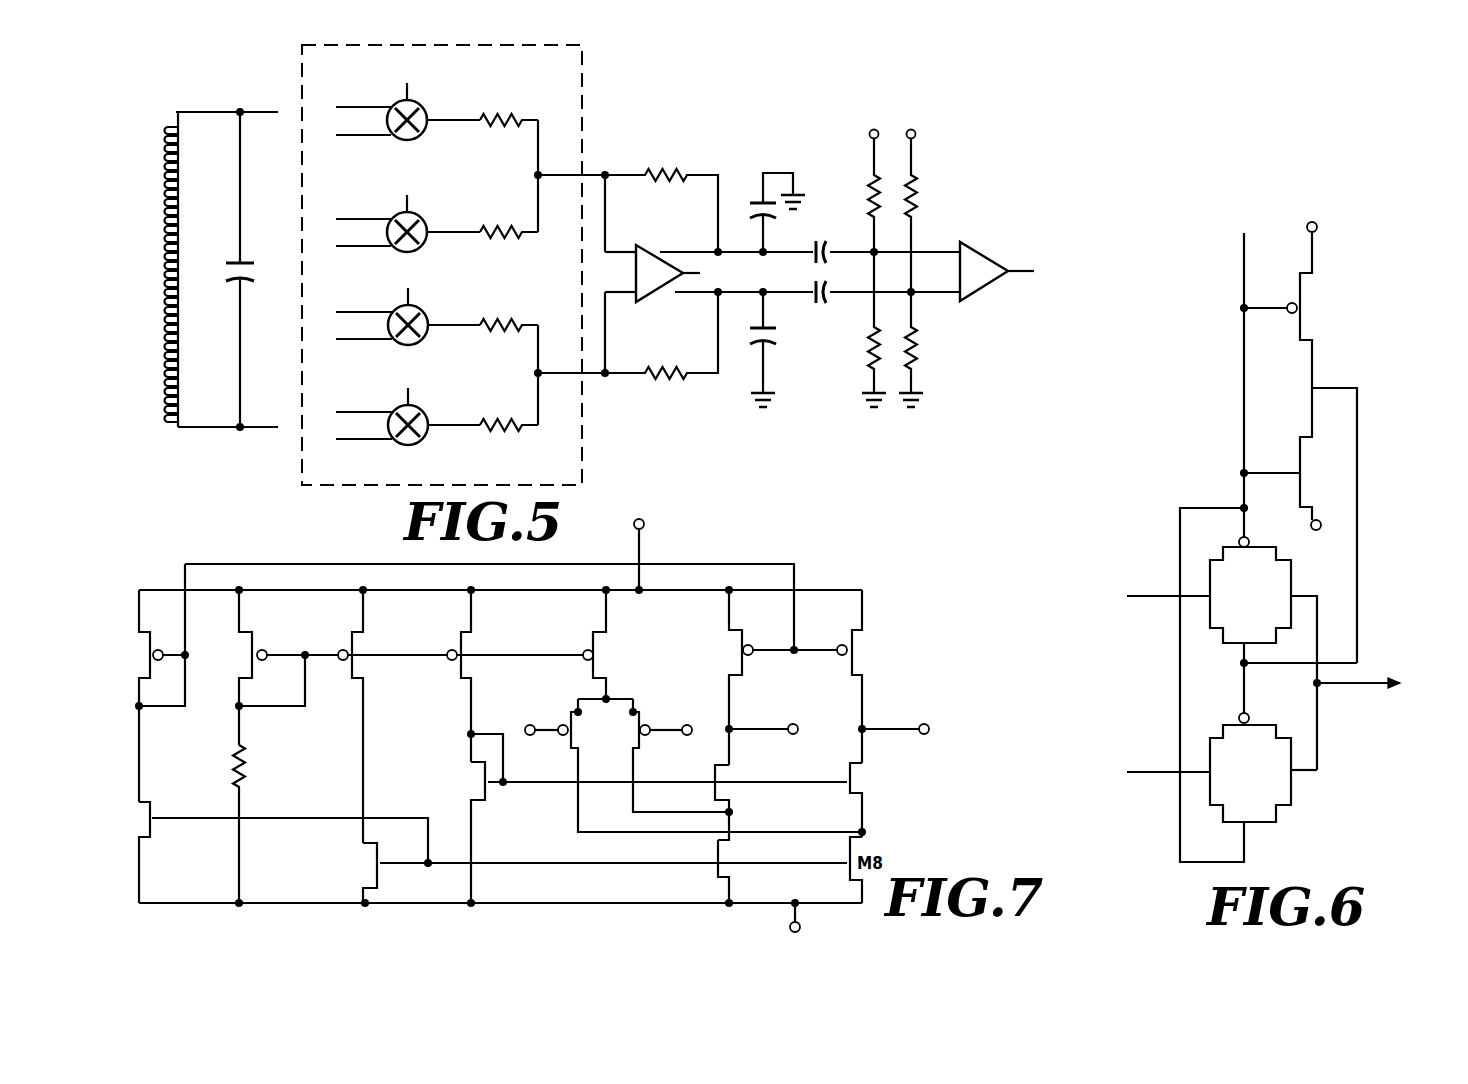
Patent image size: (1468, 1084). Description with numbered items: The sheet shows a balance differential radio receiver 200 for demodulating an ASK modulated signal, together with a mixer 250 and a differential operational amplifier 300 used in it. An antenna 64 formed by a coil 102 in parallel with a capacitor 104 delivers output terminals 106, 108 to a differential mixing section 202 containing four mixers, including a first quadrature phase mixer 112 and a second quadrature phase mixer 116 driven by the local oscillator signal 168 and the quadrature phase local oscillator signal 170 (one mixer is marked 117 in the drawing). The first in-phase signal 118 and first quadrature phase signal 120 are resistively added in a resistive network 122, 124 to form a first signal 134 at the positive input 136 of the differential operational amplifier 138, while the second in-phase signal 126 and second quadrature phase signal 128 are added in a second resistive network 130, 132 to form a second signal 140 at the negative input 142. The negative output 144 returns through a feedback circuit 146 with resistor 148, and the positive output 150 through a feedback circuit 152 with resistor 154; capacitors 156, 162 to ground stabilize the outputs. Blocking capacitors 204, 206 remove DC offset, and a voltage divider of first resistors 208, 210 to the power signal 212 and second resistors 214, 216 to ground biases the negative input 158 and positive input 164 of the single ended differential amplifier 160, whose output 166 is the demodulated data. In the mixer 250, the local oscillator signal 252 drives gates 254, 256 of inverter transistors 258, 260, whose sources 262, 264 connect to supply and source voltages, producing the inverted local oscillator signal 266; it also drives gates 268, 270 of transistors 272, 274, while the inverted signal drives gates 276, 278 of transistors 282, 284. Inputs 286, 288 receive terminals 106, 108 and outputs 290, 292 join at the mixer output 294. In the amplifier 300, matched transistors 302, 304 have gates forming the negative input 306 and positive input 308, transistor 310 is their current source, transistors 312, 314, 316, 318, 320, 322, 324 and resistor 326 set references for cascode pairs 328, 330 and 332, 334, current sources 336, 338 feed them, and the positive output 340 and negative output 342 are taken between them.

In FIG. 5, the antenna 64 is at (134, 358).
In FIG. 5, the coil 102 is at (170, 195).
In FIG. 5, the capacitor 104 is at (243, 262).
In FIG. 5, the output terminal 106 is at (262, 112).
In FIG. 6, the output terminal 106 is at (1152, 594).
In FIG. 5, the output terminal 108 is at (256, 427).
In FIG. 6, the output terminal 108 is at (1145, 768).
In FIG. 5, the first quadrature phase mixer 112 is at (436, 226).
In FIG. 5, the second quadrature phase mixer 116 is at (414, 446).
In FIG. 5, the mixer 117 is at (430, 336).
In FIG. 5, the first in-phase signal 118 is at (435, 122).
In FIG. 5, the first quadrature phase signal 120 is at (482, 227).
In FIG. 5, the resistive network 122 is at (488, 116).
In FIG. 5, the resistive network 124 is at (512, 240).
In FIG. 5, the second in-phase signal 126 is at (435, 323).
In FIG. 5, the second quadrature phase signal 128 is at (472, 433).
In FIG. 5, the second resistive network 130 is at (492, 320).
In FIG. 5, the second resistive network 132 is at (492, 416).
In FIG. 5, the first signal 134 is at (562, 177).
In FIG. 5, the positive input 136 is at (613, 250).
In FIG. 5, the differential operational amplifier 138 is at (651, 255).
In FIG. 5, the second signal 140 is at (563, 378).
In FIG. 5, the negative input 142 is at (614, 293).
In FIG. 5, the negative output 144 is at (719, 256).
In FIG. 5, the feedback circuit 146 is at (670, 158).
In FIG. 5, the resistor 148 is at (650, 170).
In FIG. 5, the positive output 150 is at (688, 282).
In FIG. 5, the feedback circuit 152 is at (672, 427).
In FIG. 5, the resistor 154 is at (665, 380).
In FIG. 5, the capacitor 156 is at (757, 213).
In FIG. 5, the negative input 158 is at (938, 245).
In FIG. 5, the single ended differential amplifier 160 is at (978, 248).
In FIG. 5, the capacitor 162 is at (769, 343).
In FIG. 5, the positive input 164 is at (943, 296).
In FIG. 5, the output 166 is at (1018, 270).
In FIG. 5, the local oscillator signal 168 is at (425, 80).
In FIG. 5, the quadrature phase local oscillator signal 170 is at (424, 191).
In FIG. 5, the balance differential radio receiver 200 is at (763, 74).
In FIG. 5, the differential mixing section 202 is at (584, 120).
In FIG. 5, the blocking capacitor 204 is at (811, 242).
In FIG. 5, the blocking capacitor 206 is at (828, 300).
In FIG. 5, the first resistor 208 is at (870, 190).
In FIG. 5, the first resistor 210 is at (916, 195).
In FIG. 5, the power signal 212 is at (909, 128).
In FIG. 5, the second resistor 214 is at (866, 360).
In FIG. 5, the second resistor 216 is at (918, 345).
In FIG. 6, the mixer 250 is at (1442, 168).
In FIG. 6, the local oscillator signal 252 is at (1241, 259).
In FIG. 6, the gate 254 is at (1258, 305).
In FIG. 6, the gate 256 is at (1270, 473).
In FIG. 6, the transistor 258 is at (1302, 305).
In FIG. 6, the transistor 260 is at (1300, 480).
In FIG. 6, the source 262 is at (1317, 232).
In FIG. 6, the source 264 is at (1310, 525).
In FIG. 6, the inverted local oscillator signal 266 is at (1320, 388).
In FIG. 6, the gate 268 is at (1240, 511).
In FIG. 6, the gate 270 is at (1250, 842).
In FIG. 6, the transistor 272 is at (1250, 538).
In FIG. 6, the transistor 274 is at (1282, 814).
In FIG. 6, the gate 276 is at (1240, 660).
In FIG. 6, the gate 278 is at (1242, 687).
In FIG. 6, the transistor 282 is at (1283, 640).
In FIG. 6, the transistor 284 is at (1278, 727).
In FIG. 6, the input 286 is at (1205, 580).
In FIG. 6, the input 288 is at (1208, 774).
In FIG. 6, the output 290 is at (1313, 597).
In FIG. 6, the output 292 is at (1300, 772).
In FIG. 6, the mixer output 294 is at (1342, 684).
In FIG. 7, the differential operational amplifier 300 is at (774, 531).
In FIG. 7, the matched transistor 302 is at (572, 730).
In FIG. 7, the matched transistor 304 is at (632, 712).
In FIG. 7, the negative input 306 is at (532, 736).
In FIG. 7, the positive input 308 is at (690, 734).
In FIG. 7, the transistor 310 is at (584, 651).
In FIG. 7, the transistor 312 is at (484, 800).
In FIG. 7, the transistor 314 is at (380, 868).
In FIG. 7, the transistor 316 is at (156, 821).
In FIG. 7, the transistor 318 is at (156, 644).
In FIG. 7, the transistor 320 is at (265, 651).
In FIG. 7, the transistor 322 is at (345, 664).
In FIG. 7, the transistor 324 is at (450, 661).
In FIG. 7, the resistor 326 is at (246, 776).
In FIG. 7, the cascode pair transistor 328 is at (710, 870).
In FIG. 7, the cascode pair transistor 330 is at (720, 791).
In FIG. 7, the cascode pair transistor 332 is at (860, 830).
In FIG. 7, the cascode pair transistor 334 is at (847, 766).
In FIG. 7, the transistor 336 is at (745, 646).
In FIG. 7, the transistor 338 is at (838, 646).
In FIG. 7, the positive output 340 is at (920, 735).
In FIG. 7, the negative output 342 is at (789, 735).